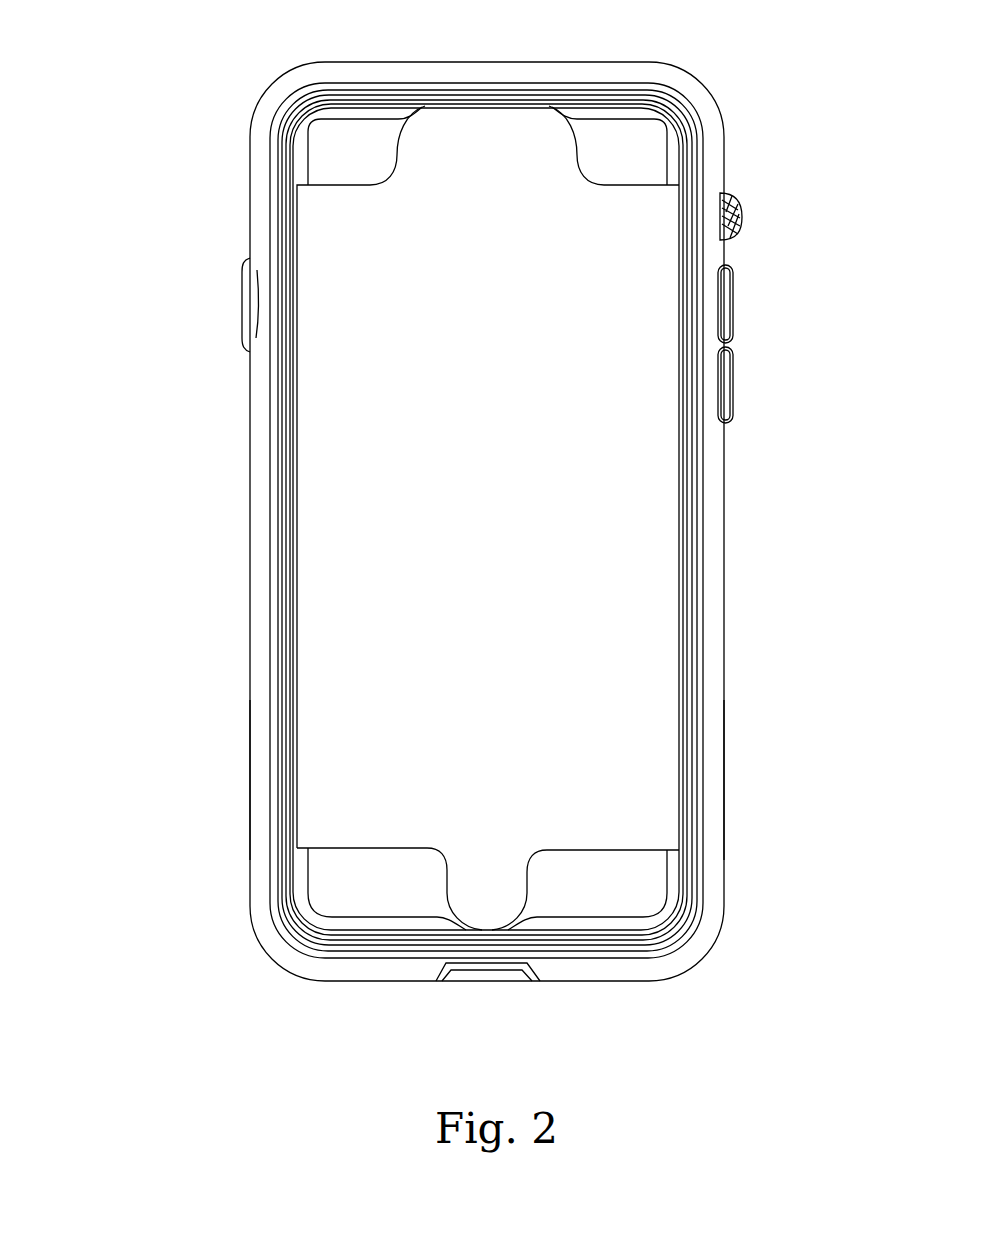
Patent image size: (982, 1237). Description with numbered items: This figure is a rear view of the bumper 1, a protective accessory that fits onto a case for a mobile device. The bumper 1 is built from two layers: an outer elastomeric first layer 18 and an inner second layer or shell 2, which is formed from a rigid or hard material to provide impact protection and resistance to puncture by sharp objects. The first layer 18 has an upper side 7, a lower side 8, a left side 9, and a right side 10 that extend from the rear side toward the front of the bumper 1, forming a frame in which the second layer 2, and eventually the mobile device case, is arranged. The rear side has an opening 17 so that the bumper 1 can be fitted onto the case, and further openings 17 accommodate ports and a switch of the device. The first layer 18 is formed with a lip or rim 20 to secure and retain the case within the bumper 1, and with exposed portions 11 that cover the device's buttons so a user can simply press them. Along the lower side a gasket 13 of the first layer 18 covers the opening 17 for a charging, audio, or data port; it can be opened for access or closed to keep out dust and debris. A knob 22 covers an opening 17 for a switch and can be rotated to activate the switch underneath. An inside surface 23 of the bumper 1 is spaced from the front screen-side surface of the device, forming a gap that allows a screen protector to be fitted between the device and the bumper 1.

The bumper 1 is at (182, 510).
The second layer or shell 2 is at (278, 648).
The upper side 7 is at (513, 57).
The lower side 8 is at (607, 980).
The left side 9 is at (720, 782).
The right side 10 is at (250, 782).
The portions 11 is at (240, 297).
The gasket 13 is at (487, 970).
The opening 17 is at (465, 445).
The first layer 18 is at (248, 582).
The lip or rim 20 is at (692, 580).
The knob 22 is at (740, 202).
The inside surface 23 is at (625, 150).